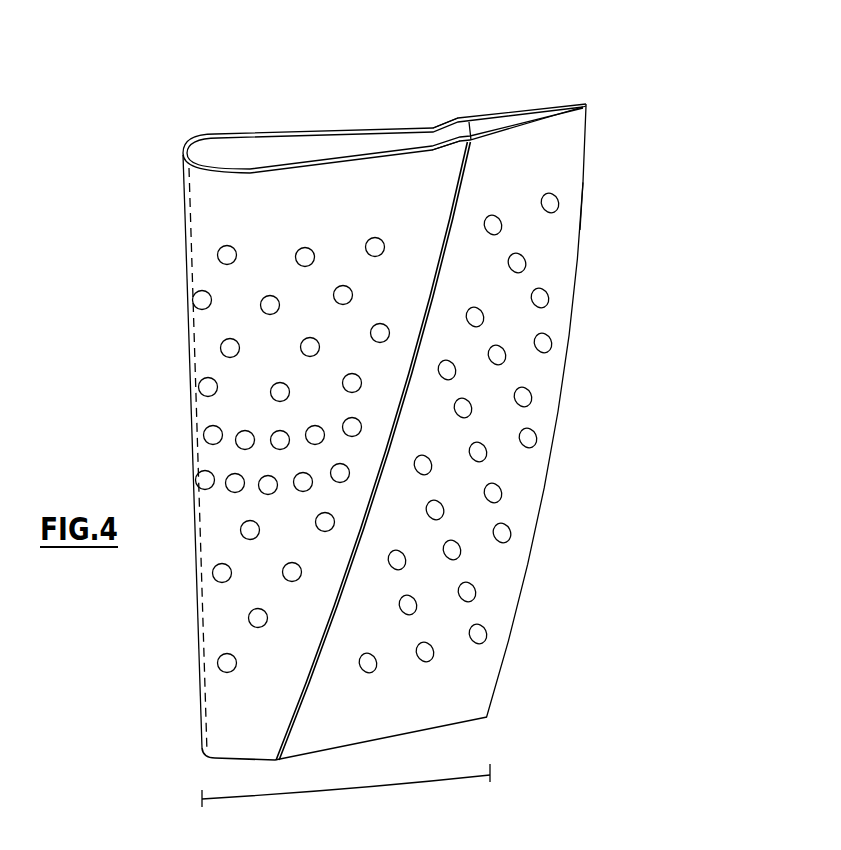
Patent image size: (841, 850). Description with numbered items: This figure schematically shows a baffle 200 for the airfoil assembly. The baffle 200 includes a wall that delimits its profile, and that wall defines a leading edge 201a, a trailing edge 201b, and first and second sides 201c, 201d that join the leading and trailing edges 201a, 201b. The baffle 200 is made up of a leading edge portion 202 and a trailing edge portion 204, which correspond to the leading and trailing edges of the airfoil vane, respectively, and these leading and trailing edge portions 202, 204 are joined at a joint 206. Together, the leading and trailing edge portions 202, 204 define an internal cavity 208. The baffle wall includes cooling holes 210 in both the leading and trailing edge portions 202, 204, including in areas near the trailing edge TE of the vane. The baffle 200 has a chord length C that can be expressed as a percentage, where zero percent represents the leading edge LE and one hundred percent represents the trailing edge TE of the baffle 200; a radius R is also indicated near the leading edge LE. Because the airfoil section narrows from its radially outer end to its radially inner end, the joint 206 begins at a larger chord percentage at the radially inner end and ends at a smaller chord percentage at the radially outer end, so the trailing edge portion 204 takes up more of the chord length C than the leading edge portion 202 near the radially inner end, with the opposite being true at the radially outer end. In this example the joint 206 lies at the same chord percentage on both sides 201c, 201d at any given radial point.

The baffle 200 is at (222, 104).
The leading edge 201a is at (162, 160).
The trailing edge 201b is at (603, 108).
The first side 201c is at (268, 176).
The second side 201d is at (361, 143).
The leading edge portion 202 is at (187, 253).
The trailing edge portion 204 is at (580, 238).
The joint 206 is at (445, 102).
The internal cavity 208 is at (310, 142).
The cooling holes 210 is at (199, 306).
The leading edge radius R is at (182, 150).
The leading edge LE is at (160, 207).
The trailing edge TE is at (612, 159).
The chord length C is at (346, 784).